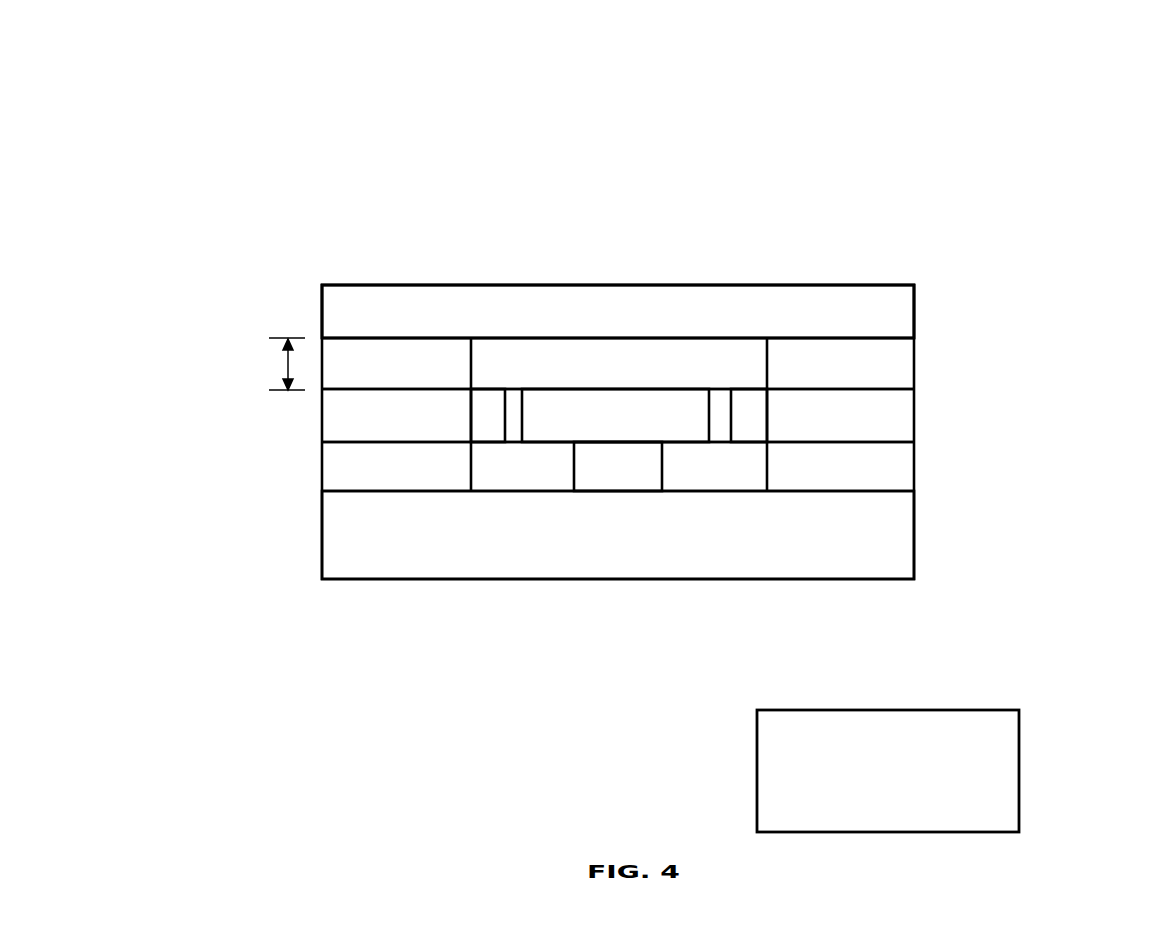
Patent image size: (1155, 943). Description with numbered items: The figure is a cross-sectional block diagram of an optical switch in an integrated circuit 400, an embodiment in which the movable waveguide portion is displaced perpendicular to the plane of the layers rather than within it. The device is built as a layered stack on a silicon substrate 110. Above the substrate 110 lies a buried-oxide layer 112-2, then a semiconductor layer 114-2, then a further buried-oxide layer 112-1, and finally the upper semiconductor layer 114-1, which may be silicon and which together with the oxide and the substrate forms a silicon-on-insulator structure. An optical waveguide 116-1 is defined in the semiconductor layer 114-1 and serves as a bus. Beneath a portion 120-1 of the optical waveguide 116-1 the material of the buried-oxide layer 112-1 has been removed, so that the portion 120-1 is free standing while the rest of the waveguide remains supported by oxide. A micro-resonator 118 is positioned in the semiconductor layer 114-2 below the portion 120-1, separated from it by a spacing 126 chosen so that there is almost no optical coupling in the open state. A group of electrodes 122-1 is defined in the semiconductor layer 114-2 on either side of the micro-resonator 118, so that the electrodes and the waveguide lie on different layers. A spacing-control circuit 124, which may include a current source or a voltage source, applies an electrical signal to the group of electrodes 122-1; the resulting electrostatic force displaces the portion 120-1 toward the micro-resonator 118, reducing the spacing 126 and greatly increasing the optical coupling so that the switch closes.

The integrated circuit 400 is at (863, 98).
The semiconductor layer 114-1 is at (927, 338).
The optical waveguide 116-1 is at (766, 302).
The portion 120-1 is at (767, 275).
The buried-oxide layer 112-1 is at (440, 372).
The semiconductor layer 114-2 is at (927, 442).
The group of electrodes 122-1 is at (748, 417).
The micro-resonator 118 is at (540, 417).
The buried-oxide layer 112-2 is at (375, 465).
The substrate 110 is at (853, 547).
The spacing 126 is at (285, 365).
The spacing-control circuit 124 is at (888, 771).